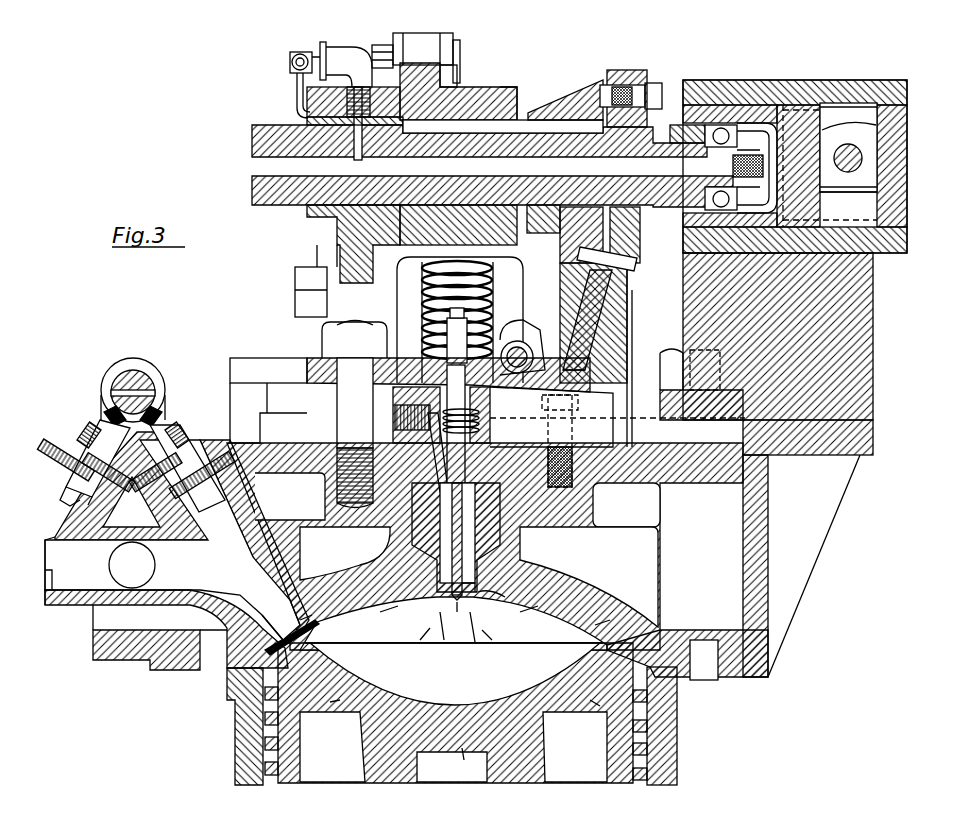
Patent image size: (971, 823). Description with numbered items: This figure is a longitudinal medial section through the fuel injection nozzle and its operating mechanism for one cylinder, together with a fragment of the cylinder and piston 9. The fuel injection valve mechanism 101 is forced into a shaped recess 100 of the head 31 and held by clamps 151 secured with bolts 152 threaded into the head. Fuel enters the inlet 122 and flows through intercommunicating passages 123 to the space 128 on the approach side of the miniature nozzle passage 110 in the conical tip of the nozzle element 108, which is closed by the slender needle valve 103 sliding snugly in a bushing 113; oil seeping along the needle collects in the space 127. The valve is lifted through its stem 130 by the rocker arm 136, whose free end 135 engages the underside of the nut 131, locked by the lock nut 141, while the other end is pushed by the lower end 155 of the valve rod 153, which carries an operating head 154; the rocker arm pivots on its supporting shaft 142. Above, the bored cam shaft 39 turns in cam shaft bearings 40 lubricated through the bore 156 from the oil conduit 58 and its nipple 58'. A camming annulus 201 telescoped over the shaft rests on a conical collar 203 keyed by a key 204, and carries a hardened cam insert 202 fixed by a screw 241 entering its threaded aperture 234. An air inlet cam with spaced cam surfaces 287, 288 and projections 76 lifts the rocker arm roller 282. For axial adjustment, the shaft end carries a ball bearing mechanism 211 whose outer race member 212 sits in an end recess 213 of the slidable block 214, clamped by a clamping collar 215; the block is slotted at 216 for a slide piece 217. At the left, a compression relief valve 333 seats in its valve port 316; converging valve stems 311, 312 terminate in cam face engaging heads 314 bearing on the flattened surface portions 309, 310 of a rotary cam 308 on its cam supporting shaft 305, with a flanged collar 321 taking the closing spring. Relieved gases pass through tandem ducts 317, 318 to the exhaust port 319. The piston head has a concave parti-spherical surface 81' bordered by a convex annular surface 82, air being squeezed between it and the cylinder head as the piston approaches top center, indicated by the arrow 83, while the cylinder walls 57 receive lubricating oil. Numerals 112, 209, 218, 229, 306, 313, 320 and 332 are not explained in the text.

The piston 9 is at (462, 750).
The head 31 is at (636, 476).
The cam shaft 39 is at (258, 205).
The cam shaft bearings 40 is at (307, 236).
The walls of the engine cylinder 57 is at (617, 441).
The lubricating oil supplying conduit 58 is at (290, 85).
The nipple 58' is at (342, 68).
The projections 76 is at (457, 52).
The concave parti-spherical surface 81' is at (455, 713).
The convex annular parti-spherical surface 82 is at (665, 628).
The arrow 83 is at (440, 748).
The recess 100 is at (412, 543).
The fuel injection valve mechanism 101 is at (486, 440).
The needle valve 103 is at (447, 596).
The nozzle element 108 is at (468, 597).
The nozzle passage 110 is at (456, 614).
The needle spring 112 is at (480, 426).
The bushing 113 is at (510, 456).
The inlet 122 is at (395, 415).
The intercommunicating passages 123 is at (400, 436).
The space 127 is at (483, 413).
The space 128 is at (502, 598).
The valve stem 130 is at (456, 378).
The nut 131 is at (456, 335).
The free end of the rocker arm 135 is at (436, 636).
The rocker arm 136 is at (521, 341).
The lock nut 141 is at (436, 322).
The rocker arm supporting shaft 142 is at (531, 318).
The clamps 151 is at (263, 362).
The bolts 152 is at (354, 320).
The valve rod 153 is at (602, 300).
The operating head 154 is at (596, 259).
The lower end of the valve rod 155 is at (590, 370).
The bore 156 is at (356, 150).
The camming annulus 201 is at (650, 85).
The cam insert 202 is at (622, 72).
The conical collar 203 is at (567, 98).
The key 204 is at (520, 130).
The mounting block 209 is at (470, 90).
The ball bearing mechanism 211 is at (712, 197).
The outer race member 212 is at (750, 197).
The end recess 213 is at (762, 204).
The slidable block 214 is at (897, 208).
The clamping collar 215 is at (666, 138).
The slot 216 is at (890, 190).
The slide piece 217 is at (880, 175).
The pin 218 is at (865, 158).
The body block 229 is at (872, 344).
The threaded aperture 234 is at (613, 80).
The screw 241 is at (662, 95).
The rocker arm roller 282 is at (425, 33).
The cam surface 287 is at (458, 72).
The cam surface 288 is at (510, 87).
The cam supporting shaft 305 is at (106, 384).
The valve body 306 is at (168, 380).
The rotary cam 308 is at (150, 367).
The flattened surface portion 309 is at (100, 410).
The flattened surface portion 310 is at (175, 409).
The valve stem 311 is at (84, 480).
The valve stem 312 is at (183, 482).
The right threaded collar 313 is at (174, 431).
The cam face engaging head 314 is at (90, 425).
The valve port 316 is at (330, 624).
The tandem duct 317 is at (192, 583).
The tandem duct 318 is at (58, 562).
The exhaust port 319 is at (128, 554).
The inlet bore 320 is at (190, 507).
The flanged collar 321 is at (144, 442).
The outer thread 332 is at (74, 446).
The compression relief valve 333 is at (275, 630).